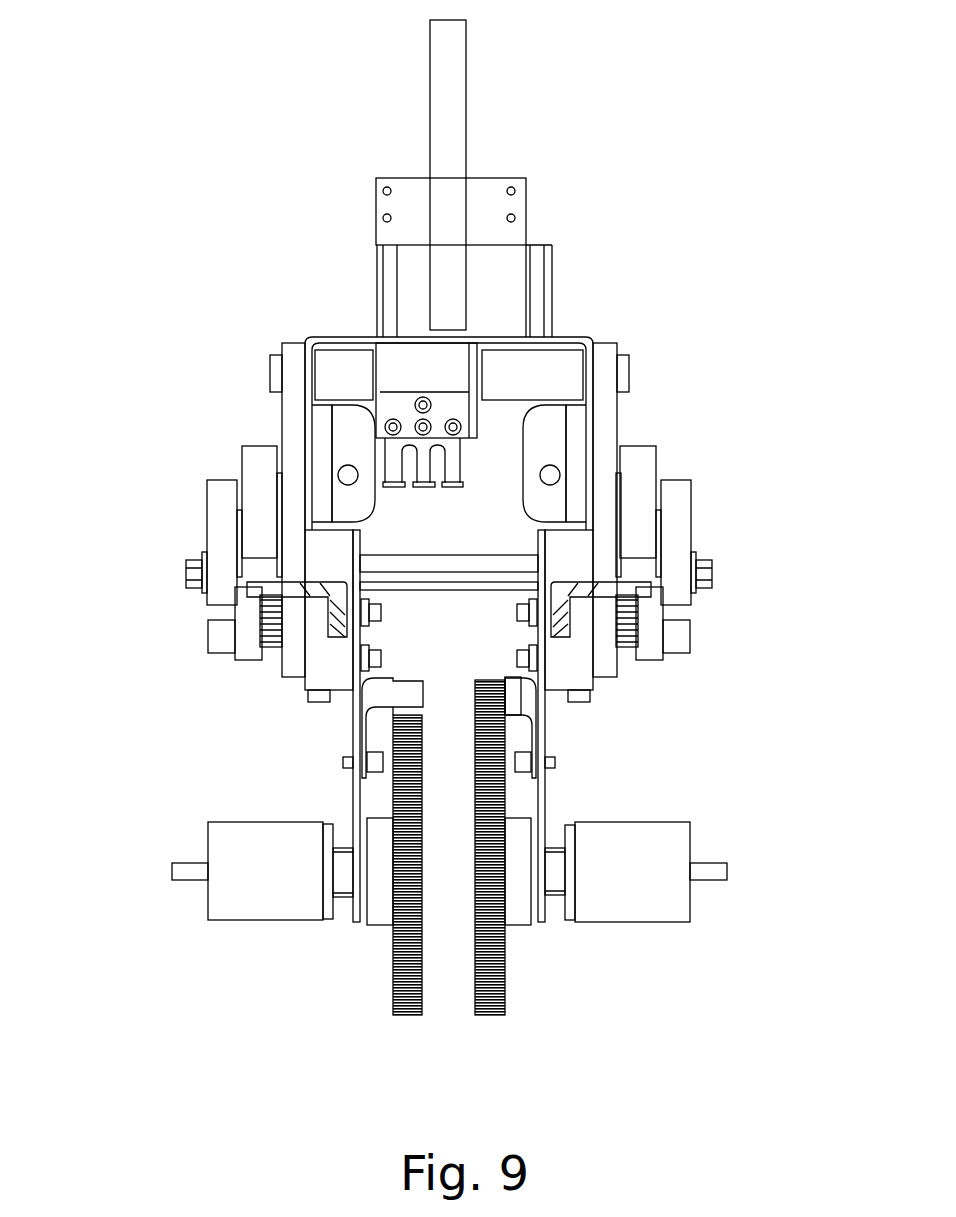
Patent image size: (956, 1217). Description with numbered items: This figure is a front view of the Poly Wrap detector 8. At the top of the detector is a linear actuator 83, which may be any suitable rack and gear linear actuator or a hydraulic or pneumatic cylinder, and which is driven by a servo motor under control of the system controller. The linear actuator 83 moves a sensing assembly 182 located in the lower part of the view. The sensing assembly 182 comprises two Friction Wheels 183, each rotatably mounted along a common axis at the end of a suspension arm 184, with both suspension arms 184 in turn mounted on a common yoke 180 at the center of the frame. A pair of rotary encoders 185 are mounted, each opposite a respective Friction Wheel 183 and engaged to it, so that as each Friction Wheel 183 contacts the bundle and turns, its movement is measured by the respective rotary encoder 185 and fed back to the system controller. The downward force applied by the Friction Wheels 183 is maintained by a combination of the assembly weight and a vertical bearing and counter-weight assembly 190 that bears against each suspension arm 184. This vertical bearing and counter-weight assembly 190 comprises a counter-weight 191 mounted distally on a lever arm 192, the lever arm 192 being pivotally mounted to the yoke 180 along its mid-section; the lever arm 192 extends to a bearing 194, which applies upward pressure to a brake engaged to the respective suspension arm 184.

The Poly Wrap detector 8 is at (223, 155).
The linear actuator 83 is at (428, 118).
The yoke 180 is at (538, 388).
The sensing assembly 182 is at (248, 963).
The Friction Wheel 183 is at (395, 988).
The suspension arm 184 is at (282, 420).
The rotary encoder 185 is at (208, 840).
The vertical bearing and counter-weight assembly 190 is at (743, 402).
The counter-weight 191 is at (243, 470).
The lever arm 192 is at (207, 508).
The bearing 194 is at (253, 662).